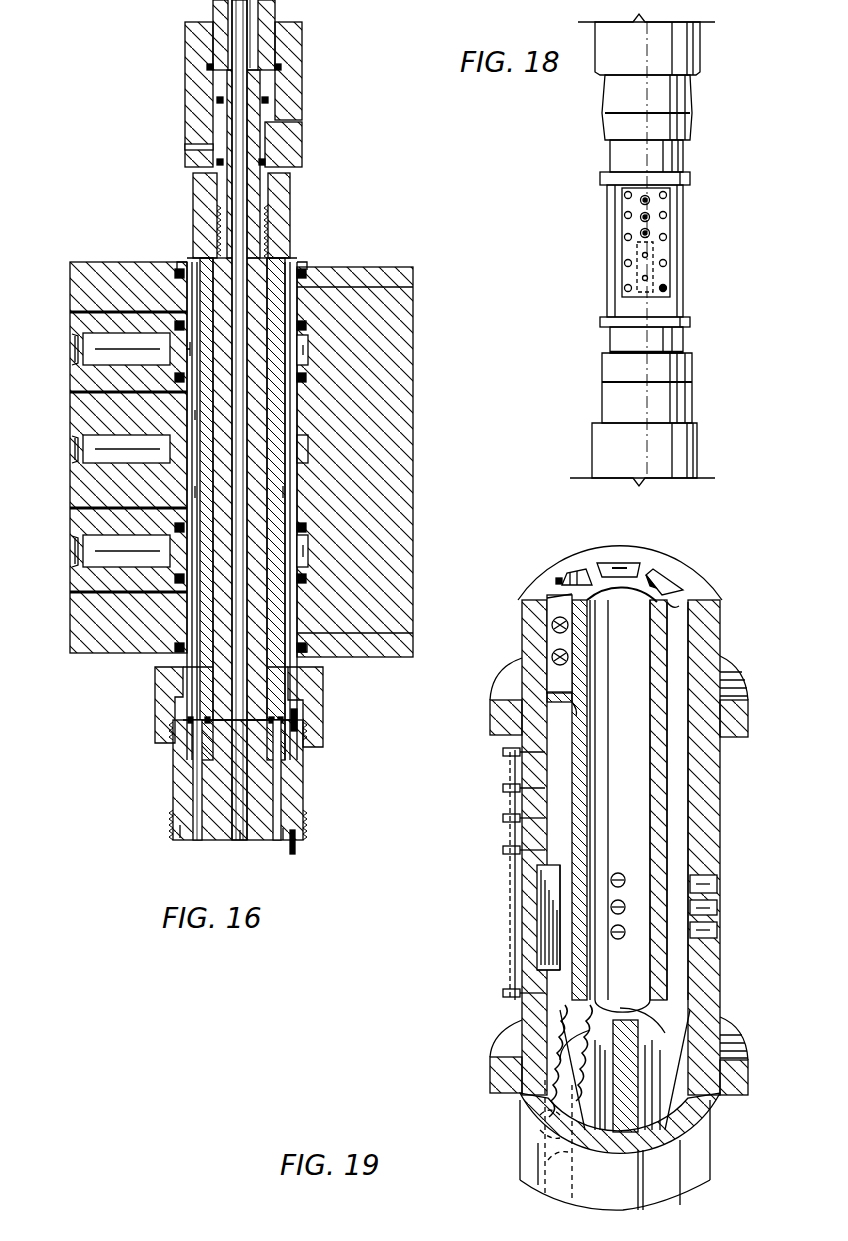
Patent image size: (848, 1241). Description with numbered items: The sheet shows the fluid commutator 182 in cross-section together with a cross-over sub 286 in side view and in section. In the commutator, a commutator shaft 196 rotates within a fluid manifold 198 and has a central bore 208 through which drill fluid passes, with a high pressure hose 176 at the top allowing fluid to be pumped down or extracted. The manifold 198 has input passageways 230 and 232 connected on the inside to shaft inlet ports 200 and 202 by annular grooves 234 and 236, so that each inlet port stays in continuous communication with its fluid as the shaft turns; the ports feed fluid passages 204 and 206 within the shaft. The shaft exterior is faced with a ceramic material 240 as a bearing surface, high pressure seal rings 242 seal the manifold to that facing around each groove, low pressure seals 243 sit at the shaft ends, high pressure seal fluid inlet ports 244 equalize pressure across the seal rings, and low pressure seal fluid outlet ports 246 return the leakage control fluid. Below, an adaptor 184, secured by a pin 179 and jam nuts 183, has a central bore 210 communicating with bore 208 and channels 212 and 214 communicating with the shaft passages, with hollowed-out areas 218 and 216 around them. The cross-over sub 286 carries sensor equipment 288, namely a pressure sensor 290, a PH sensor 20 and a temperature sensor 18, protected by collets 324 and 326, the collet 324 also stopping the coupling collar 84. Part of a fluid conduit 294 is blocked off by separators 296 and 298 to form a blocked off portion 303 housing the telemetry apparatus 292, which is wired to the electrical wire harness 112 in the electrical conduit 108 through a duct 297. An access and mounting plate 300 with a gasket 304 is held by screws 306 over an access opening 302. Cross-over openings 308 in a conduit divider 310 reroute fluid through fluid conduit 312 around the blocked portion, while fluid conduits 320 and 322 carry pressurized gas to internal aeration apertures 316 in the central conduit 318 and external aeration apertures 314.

In FIG. 16, the high pressure hose 176 is at (276, 4).
In FIG. 16, the fluid commutator 182 is at (132, 212).
In FIG. 16, the central bore 208 is at (245, 186).
In FIG. 16, the low pressure seals 243 is at (304, 273).
In FIG. 16, the low pressure seal fluid outlet ports 246 is at (76, 442).
In FIG. 16, the high pressure seal fluid inlet ports 244 is at (66, 312).
In FIG. 16, the input passageway 230 is at (76, 350).
In FIG. 16, the input passageway 232 is at (76, 550).
In FIG. 16, the inlet port 200 is at (190, 350).
In FIG. 16, the ceramic material 240 is at (198, 413).
In FIG. 16, the fluid passage 204 is at (194, 494).
In FIG. 16, the high pressure seal rings 242 is at (306, 325).
In FIG. 16, the annular groove 234 is at (305, 349).
In FIG. 16, the fluid manifold 198 is at (413, 396).
In FIG. 16, the fluid passage 206 is at (285, 491).
In FIG. 16, the inlet port 202 is at (305, 549).
In FIG. 16, the annular groove 236 is at (305, 571).
In FIG. 16, the commutator shaft 196 is at (255, 690).
In FIG. 16, the jam nuts 183 is at (303, 725).
In FIG. 16, the pin 179 is at (296, 732).
In FIG. 16, the adaptor 184 is at (321, 796).
In FIG. 16, the channel 214 is at (278, 804).
In FIG. 16, the channel 212 is at (182, 840).
In FIG. 16, the hollowed-out area 218 is at (196, 840).
In FIG. 16, the central bore 210 is at (242, 840).
In FIG. 16, the hollowed-out area 216 is at (284, 840).
In FIG. 18, the coupling collar 84 is at (700, 52).
In FIG. 18, the collet 324 is at (690, 178).
In FIG. 19, the collet 324 is at (734, 708).
In FIG. 18, the pressure sensor 290 is at (650, 200).
In FIG. 19, the pressure sensor 290 is at (502, 788).
In FIG. 18, the PH sensor 20 is at (650, 217).
In FIG. 19, the PH sensor 20 is at (502, 818).
In FIG. 18, the temperature sensor 18 is at (650, 233).
In FIG. 19, the temperature sensor 18 is at (502, 850).
In FIG. 18, the cross-over sub 286 is at (597, 249).
In FIG. 19, the cross-over sub 286 is at (722, 824).
In FIG. 18, the sensor equipment 288 is at (676, 278).
In FIG. 18, the screws 306 is at (666, 288).
In FIG. 19, the screws 306 is at (503, 993).
In FIG. 18, the access and mounting plate 300 is at (622, 277).
In FIG. 19, the access and mounting plate 300 is at (516, 905).
In FIG. 19, the conduit divider 310 is at (559, 576).
In FIG. 19, the fluid conduit 312 is at (570, 568).
In FIG. 19, the fluid conduit 320 is at (622, 566).
In FIG. 19, the central conduit 318 is at (662, 592).
In FIG. 19, the fluid conduit 322 is at (679, 602).
In FIG. 19, the cross-over openings 308 is at (554, 624).
In FIG. 19, the fluid conduit 294 is at (554, 643).
In FIG. 19, the blocked off portion 303 is at (557, 739).
In FIG. 19, the separator 296 is at (563, 713).
In FIG. 19, the internal aeration apertures 316 is at (620, 873).
In FIG. 19, the electrical wire harness 112 is at (625, 931).
In FIG. 19, the external aeration apertures 314 is at (706, 911).
In FIG. 19, the gasket 304 is at (538, 882).
In FIG. 19, the telemetry apparatus 292 is at (540, 924).
In FIG. 19, the access opening 302 is at (537, 971).
In FIG. 19, the duct 297 is at (556, 1061).
In FIG. 19, the electrical conduit 108 is at (558, 1078).
In FIG. 19, the separator 298 is at (532, 1117).
In FIG. 19, the collet 326 is at (732, 1065).